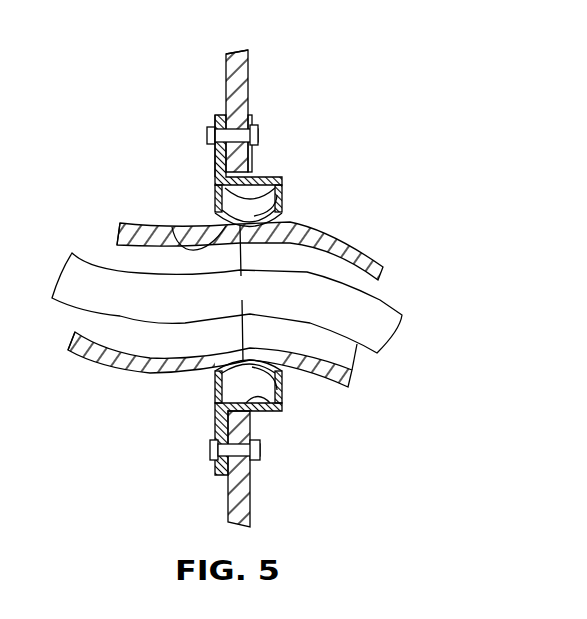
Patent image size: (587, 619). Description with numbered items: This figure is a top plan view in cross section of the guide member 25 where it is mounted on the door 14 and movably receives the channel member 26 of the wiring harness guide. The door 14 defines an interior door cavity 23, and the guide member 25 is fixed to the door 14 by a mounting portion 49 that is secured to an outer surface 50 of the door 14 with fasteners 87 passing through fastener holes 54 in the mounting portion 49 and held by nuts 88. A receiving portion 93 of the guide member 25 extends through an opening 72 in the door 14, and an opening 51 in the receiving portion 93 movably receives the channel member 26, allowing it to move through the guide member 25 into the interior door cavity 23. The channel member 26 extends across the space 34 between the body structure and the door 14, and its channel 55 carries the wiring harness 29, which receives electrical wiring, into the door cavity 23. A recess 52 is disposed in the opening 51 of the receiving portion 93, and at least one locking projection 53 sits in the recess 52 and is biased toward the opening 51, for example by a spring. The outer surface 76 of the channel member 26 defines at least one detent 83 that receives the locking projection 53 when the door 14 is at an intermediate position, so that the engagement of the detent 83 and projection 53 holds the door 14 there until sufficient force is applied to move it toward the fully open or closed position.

The door 14 is at (246, 44).
The interior door cavity 23 is at (329, 440).
The guide member 25 is at (205, 157).
The channel member 26 is at (151, 388).
The wiring harness 29 is at (335, 265).
The space 34 is at (202, 192).
The mounting portion 49 is at (216, 120).
The outer surface 50 is at (226, 70).
The opening 51 is at (169, 236).
The recess 52 is at (275, 179).
The locking projection 53 is at (254, 219).
The fastener holes 54 is at (250, 103).
The channel 55 is at (120, 335).
The opening 72 is at (270, 411).
The outer surface 76 is at (373, 252).
The detent 83 is at (212, 294).
The fasteners 87 is at (207, 132).
The nuts 88 is at (256, 126).
The receiving portion 93 is at (283, 184).